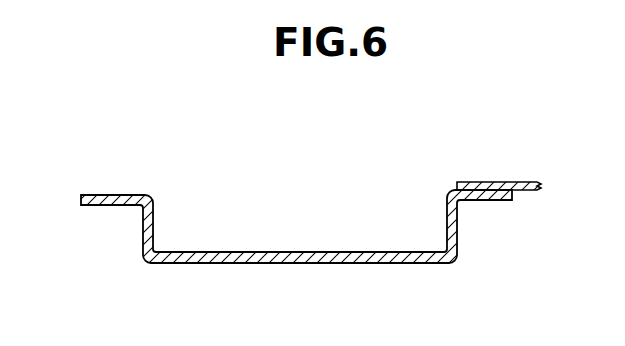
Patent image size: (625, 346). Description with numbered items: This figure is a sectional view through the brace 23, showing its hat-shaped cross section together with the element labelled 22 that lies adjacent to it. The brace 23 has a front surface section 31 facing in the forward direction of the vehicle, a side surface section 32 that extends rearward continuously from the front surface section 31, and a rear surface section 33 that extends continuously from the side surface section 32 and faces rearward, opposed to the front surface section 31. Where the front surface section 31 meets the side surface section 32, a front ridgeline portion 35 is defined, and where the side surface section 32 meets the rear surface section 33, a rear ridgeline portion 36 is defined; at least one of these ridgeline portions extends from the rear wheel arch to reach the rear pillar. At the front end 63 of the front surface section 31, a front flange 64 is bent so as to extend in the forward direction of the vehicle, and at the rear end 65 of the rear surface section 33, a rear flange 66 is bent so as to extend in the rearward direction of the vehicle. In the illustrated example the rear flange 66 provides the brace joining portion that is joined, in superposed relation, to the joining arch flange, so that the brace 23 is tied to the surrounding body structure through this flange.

The bracket (hat-shaped cross-section member) 22 is at (312, 193).
The brace 23 is at (312, 161).
The front surface section 31 is at (460, 223).
The side surface section 32 is at (303, 264).
The rear surface section 33 is at (143, 228).
The front ridgeline portion 35 is at (454, 258).
The rear ridgeline portion 36 is at (146, 263).
The front end of the front surface section 63 is at (440, 200).
The front flange 64 is at (500, 202).
The rear end of the rear surface section 65 is at (163, 200).
The rear flange 66 is at (93, 195).